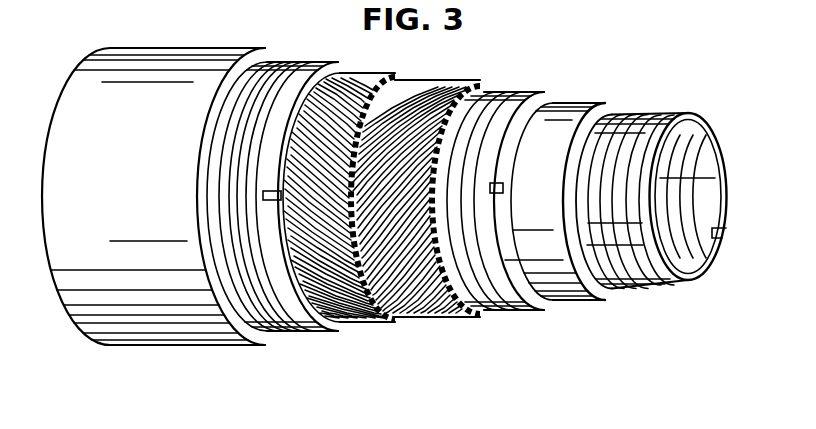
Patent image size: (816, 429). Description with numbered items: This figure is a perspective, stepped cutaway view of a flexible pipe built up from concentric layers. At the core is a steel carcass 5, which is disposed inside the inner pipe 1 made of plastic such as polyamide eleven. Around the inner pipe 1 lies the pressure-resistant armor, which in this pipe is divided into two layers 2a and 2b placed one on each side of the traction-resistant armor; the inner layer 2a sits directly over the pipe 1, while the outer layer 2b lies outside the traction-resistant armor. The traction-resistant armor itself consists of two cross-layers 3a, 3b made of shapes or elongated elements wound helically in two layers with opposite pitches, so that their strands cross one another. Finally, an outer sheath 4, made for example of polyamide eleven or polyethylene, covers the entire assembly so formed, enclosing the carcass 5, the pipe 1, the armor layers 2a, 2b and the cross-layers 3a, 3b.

The outer sheath 4 is at (165, 315).
The layer of the pressure-resistant armor 2b is at (266, 312).
The cross-layer of traction-resistant armor 3b is at (314, 298).
The cross-layer of traction-resistant armor 3a is at (393, 283).
The layer of the pressure-resistant armor 2a is at (447, 283).
The inner pipe 1 is at (545, 283).
The steel carcass 5 is at (610, 257).